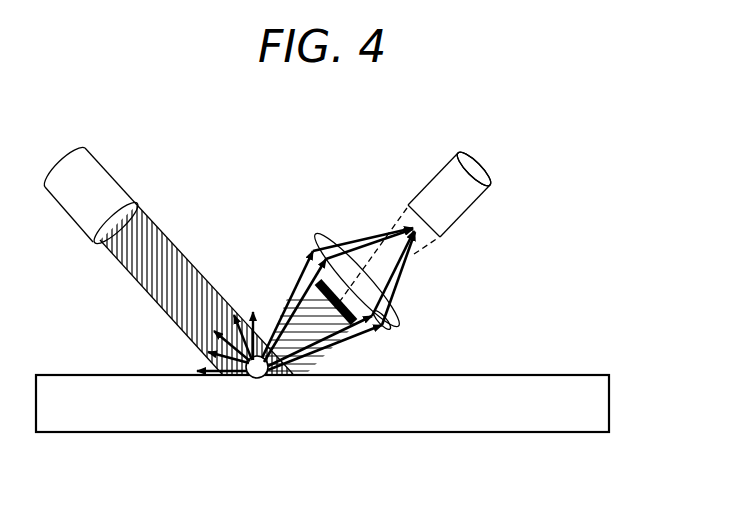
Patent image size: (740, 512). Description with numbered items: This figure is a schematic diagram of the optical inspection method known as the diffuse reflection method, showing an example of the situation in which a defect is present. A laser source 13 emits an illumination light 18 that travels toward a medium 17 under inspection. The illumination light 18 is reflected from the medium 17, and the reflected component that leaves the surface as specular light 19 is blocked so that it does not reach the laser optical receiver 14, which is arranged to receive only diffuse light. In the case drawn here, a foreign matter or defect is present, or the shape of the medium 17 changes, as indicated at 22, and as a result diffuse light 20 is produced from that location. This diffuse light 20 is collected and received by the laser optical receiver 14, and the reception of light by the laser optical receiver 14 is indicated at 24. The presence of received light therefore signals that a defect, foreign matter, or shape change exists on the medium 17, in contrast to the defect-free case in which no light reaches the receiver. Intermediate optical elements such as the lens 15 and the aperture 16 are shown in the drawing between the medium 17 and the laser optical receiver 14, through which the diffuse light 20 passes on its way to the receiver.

The laser source 13 is at (104, 181).
The laser optical receiver 14 is at (440, 188).
The condensing lens 15 is at (305, 263).
The slit / aperture 16 is at (393, 327).
The medium 17 is at (333, 420).
The illumination light 18 is at (142, 268).
The specular light 19 is at (308, 352).
The diffuse light 20 is at (248, 318).
The foreign matter or defect 22 is at (203, 364).
The light received by the laser optical receiver 24 is at (475, 168).